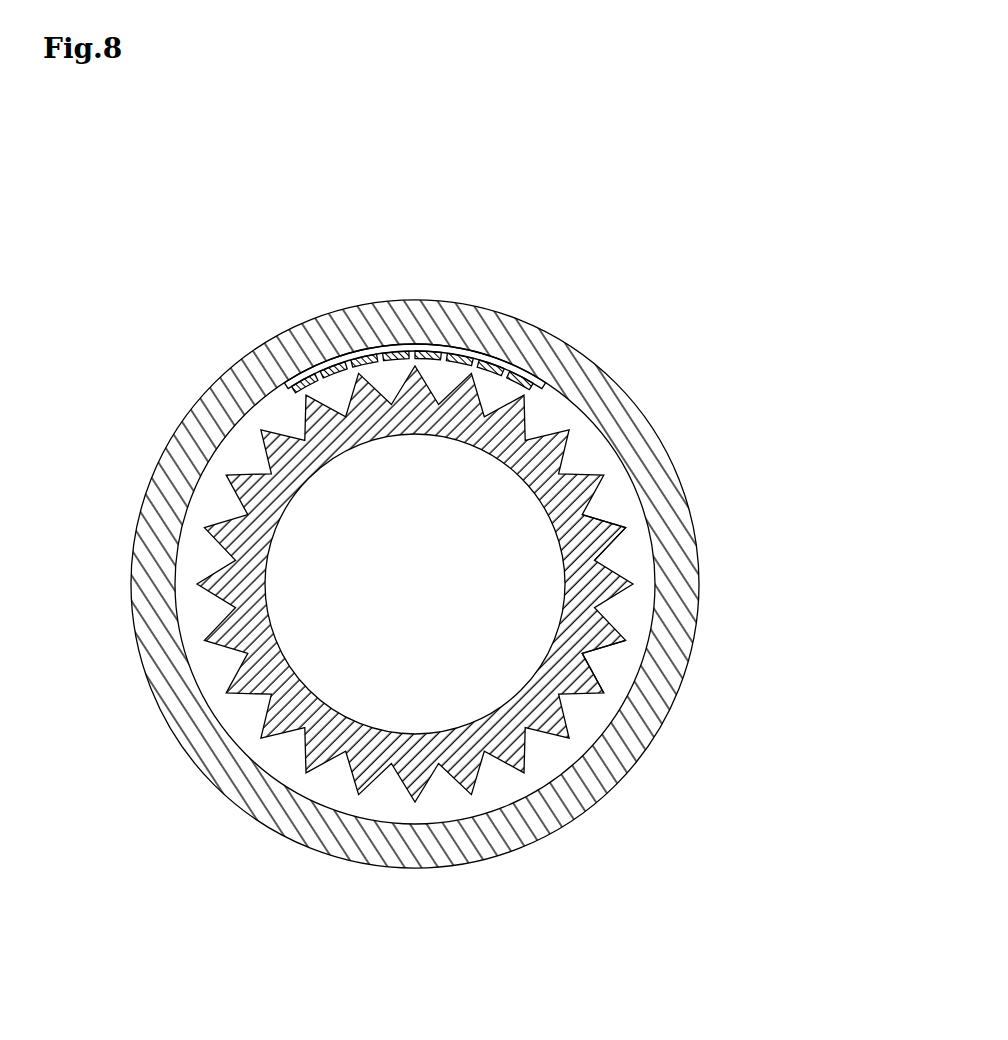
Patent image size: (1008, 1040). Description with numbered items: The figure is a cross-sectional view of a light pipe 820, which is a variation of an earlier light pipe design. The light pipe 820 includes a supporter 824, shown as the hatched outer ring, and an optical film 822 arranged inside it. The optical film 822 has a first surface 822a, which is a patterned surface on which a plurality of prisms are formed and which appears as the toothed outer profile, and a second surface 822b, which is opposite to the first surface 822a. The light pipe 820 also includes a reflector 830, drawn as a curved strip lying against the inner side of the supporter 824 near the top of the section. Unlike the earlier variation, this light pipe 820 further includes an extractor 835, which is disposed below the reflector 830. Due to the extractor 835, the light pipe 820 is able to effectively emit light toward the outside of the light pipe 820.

The light pipe 820 is at (711, 197).
The optical film 822 is at (600, 620).
The first surface 822a is at (620, 542).
The second surface 822b is at (598, 667).
The supporter 824 is at (660, 497).
The reflector 830 is at (408, 346).
The extractor 835 is at (462, 350).